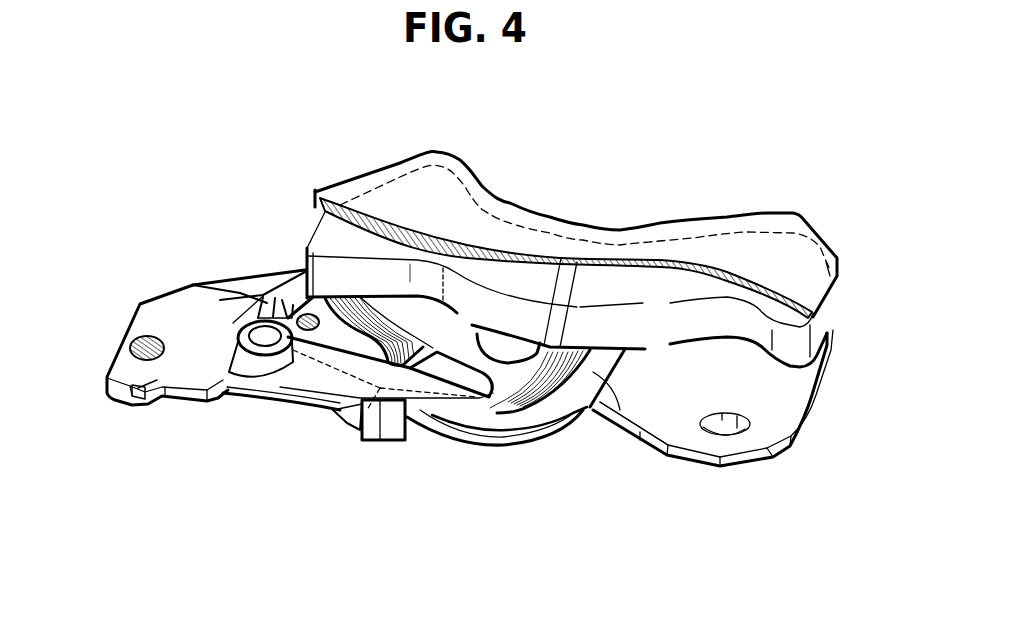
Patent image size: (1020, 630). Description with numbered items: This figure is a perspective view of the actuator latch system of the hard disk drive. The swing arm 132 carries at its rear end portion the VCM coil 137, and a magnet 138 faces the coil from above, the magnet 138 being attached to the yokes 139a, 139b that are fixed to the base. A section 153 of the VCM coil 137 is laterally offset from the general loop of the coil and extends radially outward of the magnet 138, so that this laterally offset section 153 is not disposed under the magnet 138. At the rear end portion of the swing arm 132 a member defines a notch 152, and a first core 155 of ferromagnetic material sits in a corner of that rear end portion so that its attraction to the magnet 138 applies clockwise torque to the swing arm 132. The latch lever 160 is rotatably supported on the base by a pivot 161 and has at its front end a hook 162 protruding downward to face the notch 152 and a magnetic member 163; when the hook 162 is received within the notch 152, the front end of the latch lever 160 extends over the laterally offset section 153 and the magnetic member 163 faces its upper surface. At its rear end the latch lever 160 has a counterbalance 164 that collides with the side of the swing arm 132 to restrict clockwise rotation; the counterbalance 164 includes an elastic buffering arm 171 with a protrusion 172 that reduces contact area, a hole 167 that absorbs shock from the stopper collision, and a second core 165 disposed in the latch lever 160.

The swing arm 132 is at (612, 400).
The VCM coil 137 is at (593, 372).
The magnet 138 is at (800, 348).
The yoke 139a is at (797, 215).
The yoke 139b is at (793, 400).
The notch 152 is at (340, 427).
The laterally offset section 153 is at (505, 413).
The first core 155 is at (303, 313).
The latch lever 160 is at (305, 412).
The pivot 161 is at (260, 358).
The hook 162 is at (370, 442).
The magnetic member 163 is at (452, 372).
The counterbalance 164 is at (150, 313).
The second core 165 is at (132, 347).
The hole 167 is at (133, 400).
The buffering arm 171 is at (192, 292).
The protrusion 172 is at (262, 287).